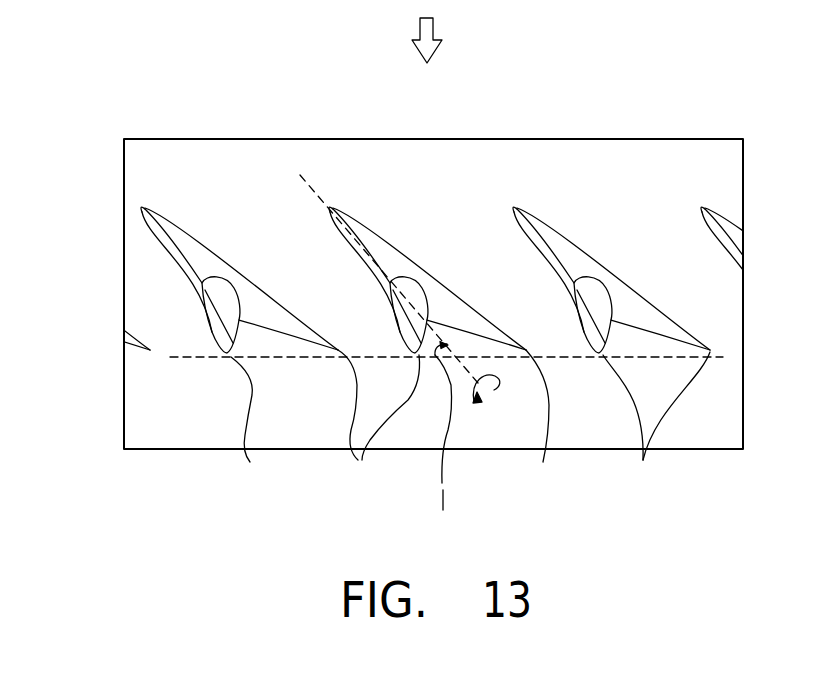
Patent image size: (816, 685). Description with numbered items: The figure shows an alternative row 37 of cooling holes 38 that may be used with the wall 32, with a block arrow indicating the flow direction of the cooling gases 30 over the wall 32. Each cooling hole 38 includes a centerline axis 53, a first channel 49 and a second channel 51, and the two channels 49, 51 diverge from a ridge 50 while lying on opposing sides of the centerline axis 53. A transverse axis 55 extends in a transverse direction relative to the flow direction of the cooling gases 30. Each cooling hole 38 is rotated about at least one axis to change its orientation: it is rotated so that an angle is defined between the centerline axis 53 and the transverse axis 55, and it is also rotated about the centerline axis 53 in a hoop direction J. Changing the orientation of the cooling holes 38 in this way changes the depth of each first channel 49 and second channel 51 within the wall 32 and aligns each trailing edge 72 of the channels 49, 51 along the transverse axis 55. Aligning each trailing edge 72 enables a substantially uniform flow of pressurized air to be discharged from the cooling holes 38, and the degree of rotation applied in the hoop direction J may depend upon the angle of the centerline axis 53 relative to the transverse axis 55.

The cooling gases 30 is at (433, 22).
The wall 32 is at (668, 190).
The row 37 is at (408, 222).
The cooling hole 38 is at (173, 195).
The first channel 49 is at (398, 330).
The ridge 50 is at (418, 316).
The second channel 51 is at (466, 306).
The centerline axis 53 is at (316, 198).
The transverse axis 55 is at (187, 358).
The trailing edge 72 is at (470, 419).
The hoop direction J is at (474, 404).